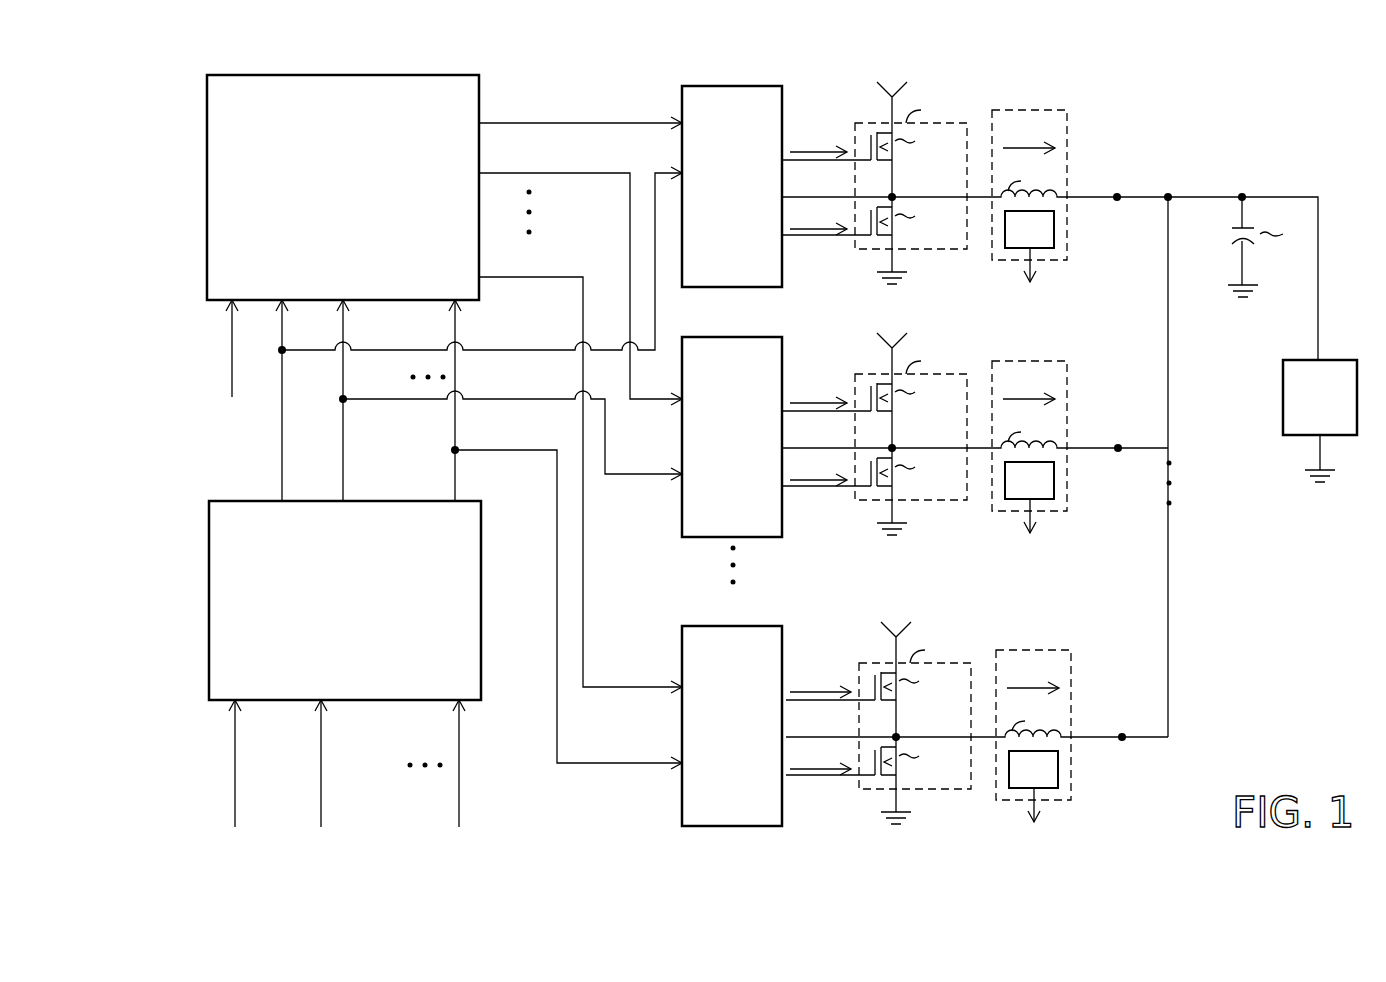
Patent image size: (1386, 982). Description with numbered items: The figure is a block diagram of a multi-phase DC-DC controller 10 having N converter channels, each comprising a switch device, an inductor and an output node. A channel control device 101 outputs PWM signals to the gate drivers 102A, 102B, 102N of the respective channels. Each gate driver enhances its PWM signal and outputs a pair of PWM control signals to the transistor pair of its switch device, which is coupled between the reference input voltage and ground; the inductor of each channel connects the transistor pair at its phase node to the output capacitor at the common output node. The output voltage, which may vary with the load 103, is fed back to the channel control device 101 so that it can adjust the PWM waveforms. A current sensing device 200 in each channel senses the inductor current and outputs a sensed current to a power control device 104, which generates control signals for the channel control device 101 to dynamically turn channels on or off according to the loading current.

The DC-DC controller 10 is at (172, 87).
The channel control device 101 is at (207, 188).
The gate driver 102A is at (700, 86).
The gate driver 102B is at (700, 337).
The gate driver 102N is at (700, 626).
The load 103 is at (1305, 360).
The power control device 104 is at (209, 601).
The current sensing device 200 is at (1054, 230).